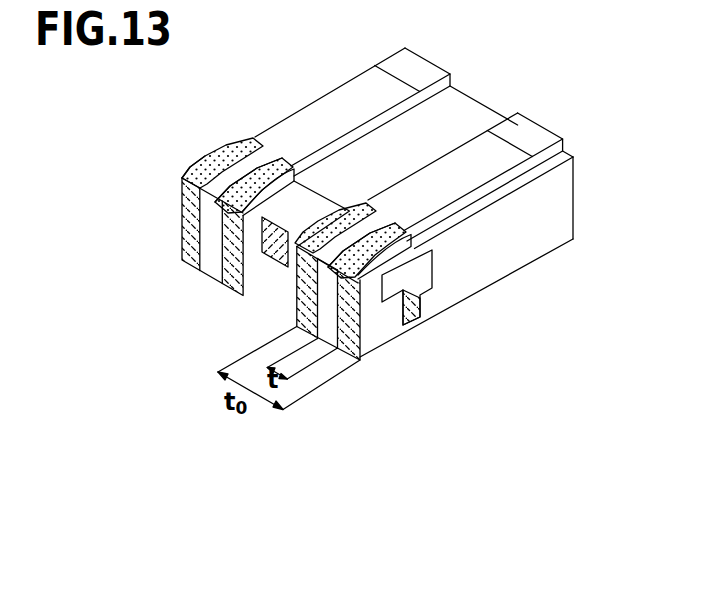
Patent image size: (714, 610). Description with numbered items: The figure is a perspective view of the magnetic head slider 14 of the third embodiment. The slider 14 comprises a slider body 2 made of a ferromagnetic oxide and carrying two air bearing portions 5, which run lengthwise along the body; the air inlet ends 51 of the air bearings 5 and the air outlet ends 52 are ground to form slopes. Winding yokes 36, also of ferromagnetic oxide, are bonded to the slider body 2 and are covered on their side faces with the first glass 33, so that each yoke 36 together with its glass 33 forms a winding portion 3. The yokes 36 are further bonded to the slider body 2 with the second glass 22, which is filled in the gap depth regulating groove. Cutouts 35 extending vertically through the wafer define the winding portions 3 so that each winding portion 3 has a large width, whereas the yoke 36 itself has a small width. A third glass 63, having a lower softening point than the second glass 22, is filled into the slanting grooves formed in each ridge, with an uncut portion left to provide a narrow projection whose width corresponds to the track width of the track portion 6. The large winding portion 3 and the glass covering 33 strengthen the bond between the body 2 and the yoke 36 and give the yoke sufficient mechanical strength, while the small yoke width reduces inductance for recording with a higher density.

The slider body 2 is at (460, 282).
The winding portion 3 is at (377, 355).
The air bearing portion 5 is at (330, 96).
The track portion 6 is at (383, 200).
The magnetic head slider 14 is at (582, 203).
The second glass 22 is at (418, 247).
The first glass 33 is at (393, 337).
The cutout 35 is at (262, 299).
The winding yoke 36 is at (323, 313).
The air inlet end 51 is at (543, 133).
The air outlet end 52 is at (180, 181).
The third glass 63 is at (228, 141).